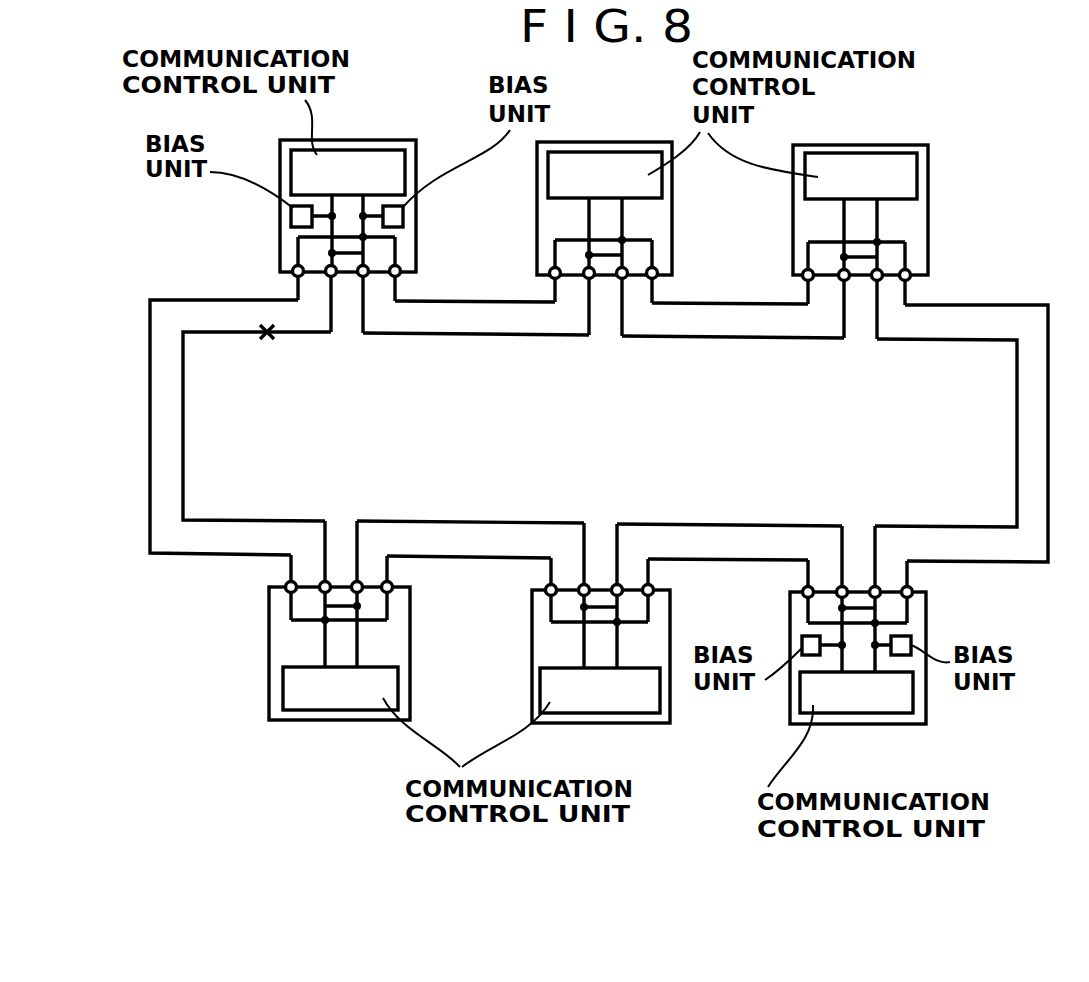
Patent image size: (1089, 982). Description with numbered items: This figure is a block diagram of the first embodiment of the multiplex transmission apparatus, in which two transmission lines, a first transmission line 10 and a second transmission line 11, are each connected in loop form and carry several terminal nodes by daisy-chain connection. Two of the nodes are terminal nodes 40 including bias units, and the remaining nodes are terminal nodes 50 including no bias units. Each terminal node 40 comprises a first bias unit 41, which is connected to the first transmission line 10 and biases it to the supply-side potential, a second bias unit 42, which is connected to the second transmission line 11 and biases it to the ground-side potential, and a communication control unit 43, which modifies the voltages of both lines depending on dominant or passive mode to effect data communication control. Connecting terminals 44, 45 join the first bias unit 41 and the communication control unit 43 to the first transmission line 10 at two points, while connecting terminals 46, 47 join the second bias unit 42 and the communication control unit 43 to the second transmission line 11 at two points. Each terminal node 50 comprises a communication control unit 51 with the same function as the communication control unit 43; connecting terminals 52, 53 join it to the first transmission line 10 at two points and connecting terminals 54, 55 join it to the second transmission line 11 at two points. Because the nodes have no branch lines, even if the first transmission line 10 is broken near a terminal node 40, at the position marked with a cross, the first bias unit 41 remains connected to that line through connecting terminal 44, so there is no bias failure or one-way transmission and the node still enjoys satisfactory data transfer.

The first transmission line 10 is at (183, 427).
The second transmission line 11 is at (150, 428).
The terminal node including bias units 40 is at (566, 430).
The first bias unit 41 is at (291, 216).
The second bias unit 42 is at (417, 215).
The communication control unit 43 is at (405, 165).
The connecting terminal 44 is at (356, 278).
The connecting terminal 45 is at (337, 278).
The connecting terminal 46 is at (401, 271).
The connecting terminal 47 is at (292, 266).
The terminal node including no bias units 50 is at (636, 142).
The communication control unit 51 is at (283, 678).
The connecting terminal 52 is at (332, 582).
The connecting terminal 53 is at (352, 582).
The connecting terminal 54 is at (286, 586).
The connecting terminal 55 is at (392, 586).